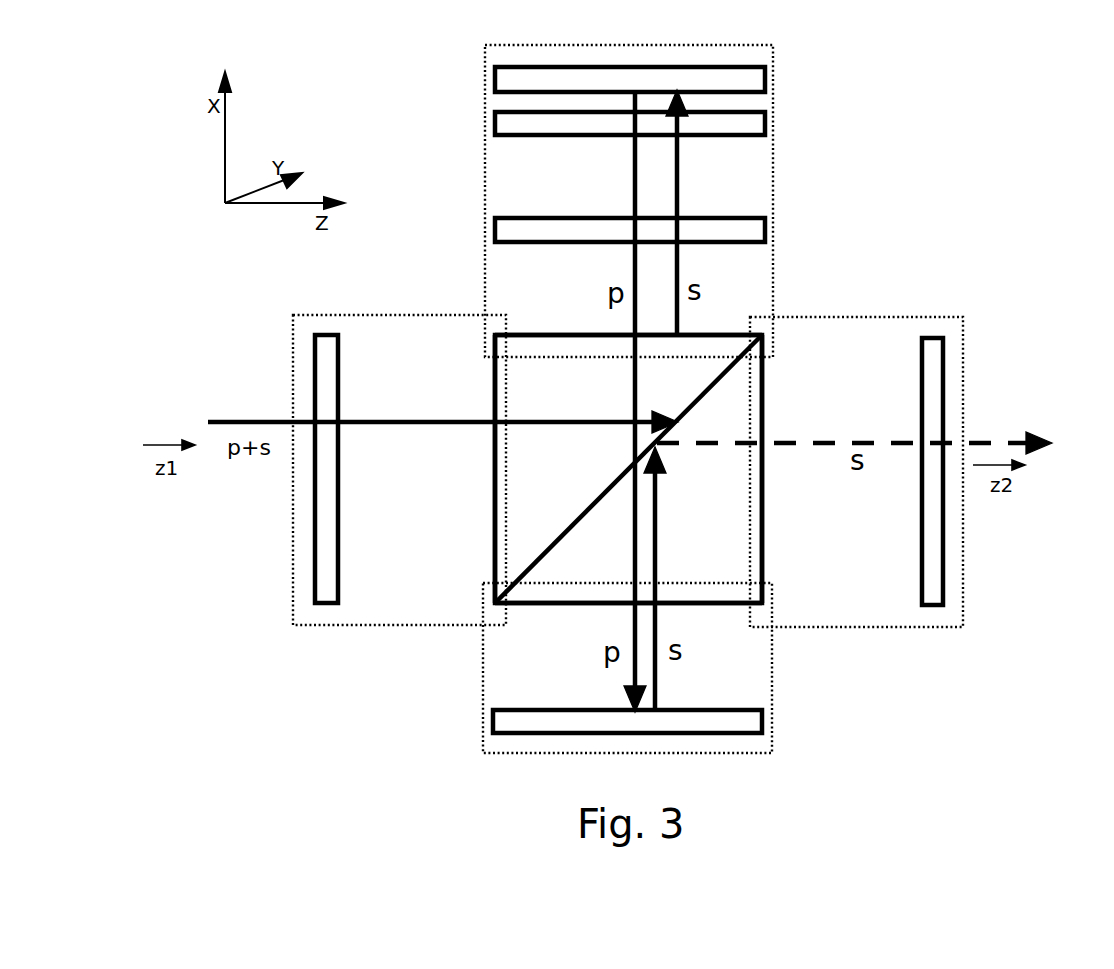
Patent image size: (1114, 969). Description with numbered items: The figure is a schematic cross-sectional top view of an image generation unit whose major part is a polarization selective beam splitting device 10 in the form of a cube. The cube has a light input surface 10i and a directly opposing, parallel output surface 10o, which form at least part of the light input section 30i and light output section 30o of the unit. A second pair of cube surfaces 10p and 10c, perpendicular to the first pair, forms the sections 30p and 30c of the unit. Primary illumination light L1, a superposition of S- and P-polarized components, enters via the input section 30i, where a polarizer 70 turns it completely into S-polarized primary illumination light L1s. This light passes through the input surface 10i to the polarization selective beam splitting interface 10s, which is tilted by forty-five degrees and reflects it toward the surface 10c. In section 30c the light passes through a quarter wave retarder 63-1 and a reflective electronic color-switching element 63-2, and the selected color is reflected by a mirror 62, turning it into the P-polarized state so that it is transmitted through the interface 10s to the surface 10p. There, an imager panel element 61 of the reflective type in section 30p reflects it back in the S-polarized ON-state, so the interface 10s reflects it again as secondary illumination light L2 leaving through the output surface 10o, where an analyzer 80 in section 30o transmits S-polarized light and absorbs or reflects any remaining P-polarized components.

The polarization selective beam splitting device 10 is at (728, 537).
The polarization selective beam splitting interface 10s is at (571, 527).
The second section/surface of the second pair of the beam splitting cube 10c is at (523, 335).
The light input/incidence surface of the beam splitting cube 10i is at (495, 560).
The light output/emission surface of the beam splitting cube 10o is at (765, 367).
The first section/surface of the second pair of the beam splitting cube 10p is at (523, 605).
The second section/surface of the second pair of the image generation unit 30c is at (769, 173).
The light input/incidence section/surface of the image generation unit 30i is at (420, 620).
The light output/emission section/surface of the image generation unit 30o is at (897, 620).
The first section/surface of the second pair of the image generation unit 30p is at (767, 675).
The imager panel element 61 is at (765, 722).
The mirror 62 is at (765, 80).
The quarter wave retarder 63-1 is at (765, 232).
The reflective electronic color-switching element 63-2 is at (765, 124).
The polarizer 70 is at (338, 347).
The analyzer 80 is at (943, 345).
The primary illumination light L1 is at (351, 405).
The S-polarized primary illumination light L1s is at (545, 411).
The secondary illumination light L2 is at (875, 449).